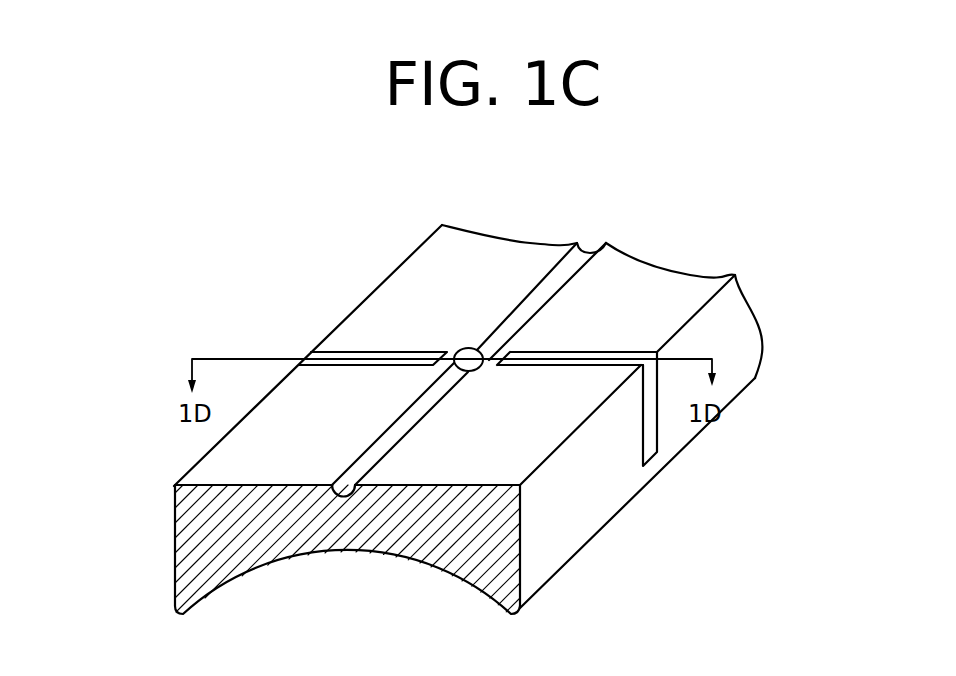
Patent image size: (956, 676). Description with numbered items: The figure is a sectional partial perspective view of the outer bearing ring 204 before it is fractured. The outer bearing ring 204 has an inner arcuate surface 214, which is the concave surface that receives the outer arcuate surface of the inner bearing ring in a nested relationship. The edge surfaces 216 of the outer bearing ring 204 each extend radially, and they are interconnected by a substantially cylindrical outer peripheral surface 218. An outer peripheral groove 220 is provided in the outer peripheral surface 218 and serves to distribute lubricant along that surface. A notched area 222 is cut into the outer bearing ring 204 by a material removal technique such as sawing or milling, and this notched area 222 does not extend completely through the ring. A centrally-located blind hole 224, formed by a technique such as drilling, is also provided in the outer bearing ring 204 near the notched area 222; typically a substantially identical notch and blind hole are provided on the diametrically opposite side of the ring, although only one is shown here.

The outer bearing ring 204 is at (806, 317).
The inner arcuate surface 214 is at (465, 577).
The edge surfaces 216 is at (173, 537).
The outer peripheral surface 218 is at (250, 457).
The outer peripheral groove 220 is at (581, 245).
The notched area 222 is at (664, 423).
The blind hole 224 is at (466, 348).